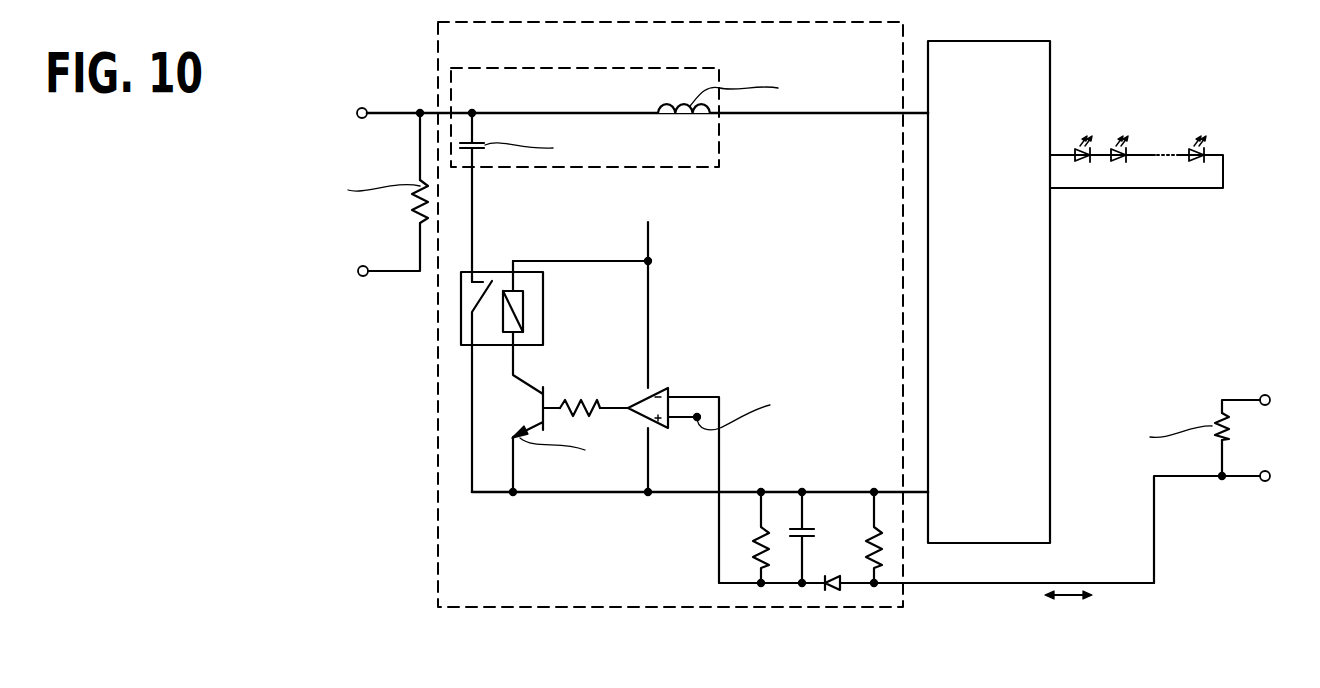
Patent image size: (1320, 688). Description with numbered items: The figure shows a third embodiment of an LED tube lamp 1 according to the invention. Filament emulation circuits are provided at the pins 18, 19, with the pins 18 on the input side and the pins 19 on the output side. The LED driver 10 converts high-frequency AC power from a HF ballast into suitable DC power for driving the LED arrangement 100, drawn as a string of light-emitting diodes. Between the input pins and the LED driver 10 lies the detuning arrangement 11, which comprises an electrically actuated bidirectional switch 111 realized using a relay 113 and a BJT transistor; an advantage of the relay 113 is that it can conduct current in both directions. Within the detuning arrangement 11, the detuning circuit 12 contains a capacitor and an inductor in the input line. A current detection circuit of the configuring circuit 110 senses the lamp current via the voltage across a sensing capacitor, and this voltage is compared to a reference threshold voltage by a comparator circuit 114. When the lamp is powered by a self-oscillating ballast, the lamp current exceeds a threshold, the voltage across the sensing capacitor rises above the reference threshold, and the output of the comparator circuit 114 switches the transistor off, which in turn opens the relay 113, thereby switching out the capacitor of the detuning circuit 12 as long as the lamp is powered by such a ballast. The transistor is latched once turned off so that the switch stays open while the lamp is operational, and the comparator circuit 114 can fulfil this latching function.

The LED tube lamp 1 is at (410, 514).
The LED driver 10 is at (928, 75).
The detuning arrangement 11 is at (855, 607).
The detuning circuit 12 is at (690, 68).
The pins 18 is at (365, 108).
The pins 19 is at (1262, 395).
The LED arrangement 100 is at (1153, 128).
The configuring circuit 110 is at (831, 470).
The electrically actuated bidirectional switch 111 is at (724, 277).
The relay 113 is at (543, 327).
The comparator circuit 114 is at (662, 389).